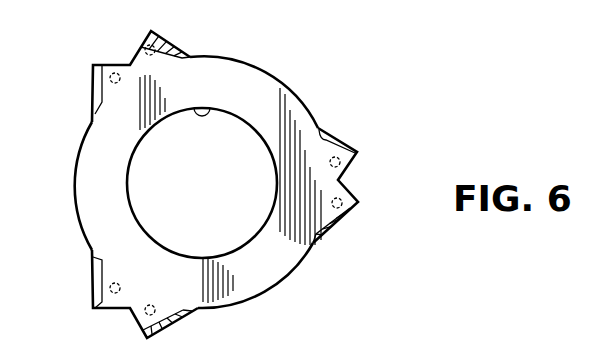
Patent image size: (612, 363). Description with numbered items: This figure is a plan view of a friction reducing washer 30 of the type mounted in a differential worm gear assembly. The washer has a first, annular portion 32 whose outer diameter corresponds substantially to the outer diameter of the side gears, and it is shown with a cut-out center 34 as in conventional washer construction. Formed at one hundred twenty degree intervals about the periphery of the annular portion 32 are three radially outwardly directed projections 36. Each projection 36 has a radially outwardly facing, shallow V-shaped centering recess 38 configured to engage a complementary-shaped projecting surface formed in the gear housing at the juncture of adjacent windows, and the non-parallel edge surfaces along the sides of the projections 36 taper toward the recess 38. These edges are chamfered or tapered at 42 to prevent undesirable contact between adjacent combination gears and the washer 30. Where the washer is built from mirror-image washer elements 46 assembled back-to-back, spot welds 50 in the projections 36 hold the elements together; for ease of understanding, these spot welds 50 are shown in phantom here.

The friction reducing washer 30 is at (296, 69).
The annular portion 32 is at (272, 279).
The cut-out center 34 is at (199, 108).
The radially outwardly directed projections 36 is at (351, 189).
The centering recess 38 is at (345, 179).
The chamfered edges 42 is at (184, 48).
The washer element 46 is at (77, 157).
The spot welds 50 is at (143, 47).